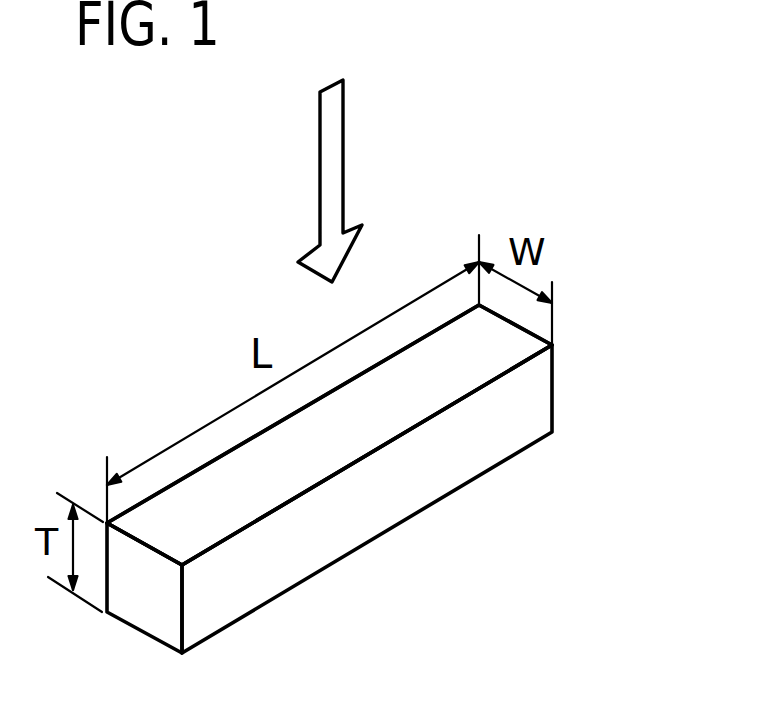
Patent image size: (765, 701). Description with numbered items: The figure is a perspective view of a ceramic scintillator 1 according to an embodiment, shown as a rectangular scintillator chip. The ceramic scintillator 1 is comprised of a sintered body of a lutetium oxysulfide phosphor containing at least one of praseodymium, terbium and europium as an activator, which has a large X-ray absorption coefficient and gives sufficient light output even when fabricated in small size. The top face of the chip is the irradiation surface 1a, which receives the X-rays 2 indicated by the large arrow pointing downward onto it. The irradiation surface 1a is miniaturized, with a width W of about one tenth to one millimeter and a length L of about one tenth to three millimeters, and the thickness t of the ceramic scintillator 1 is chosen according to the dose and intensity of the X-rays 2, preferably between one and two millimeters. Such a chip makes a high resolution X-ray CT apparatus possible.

The ceramic scintillator 1 is at (552, 393).
The irradiation surface 1a is at (300, 478).
The X-rays 2 is at (320, 170).